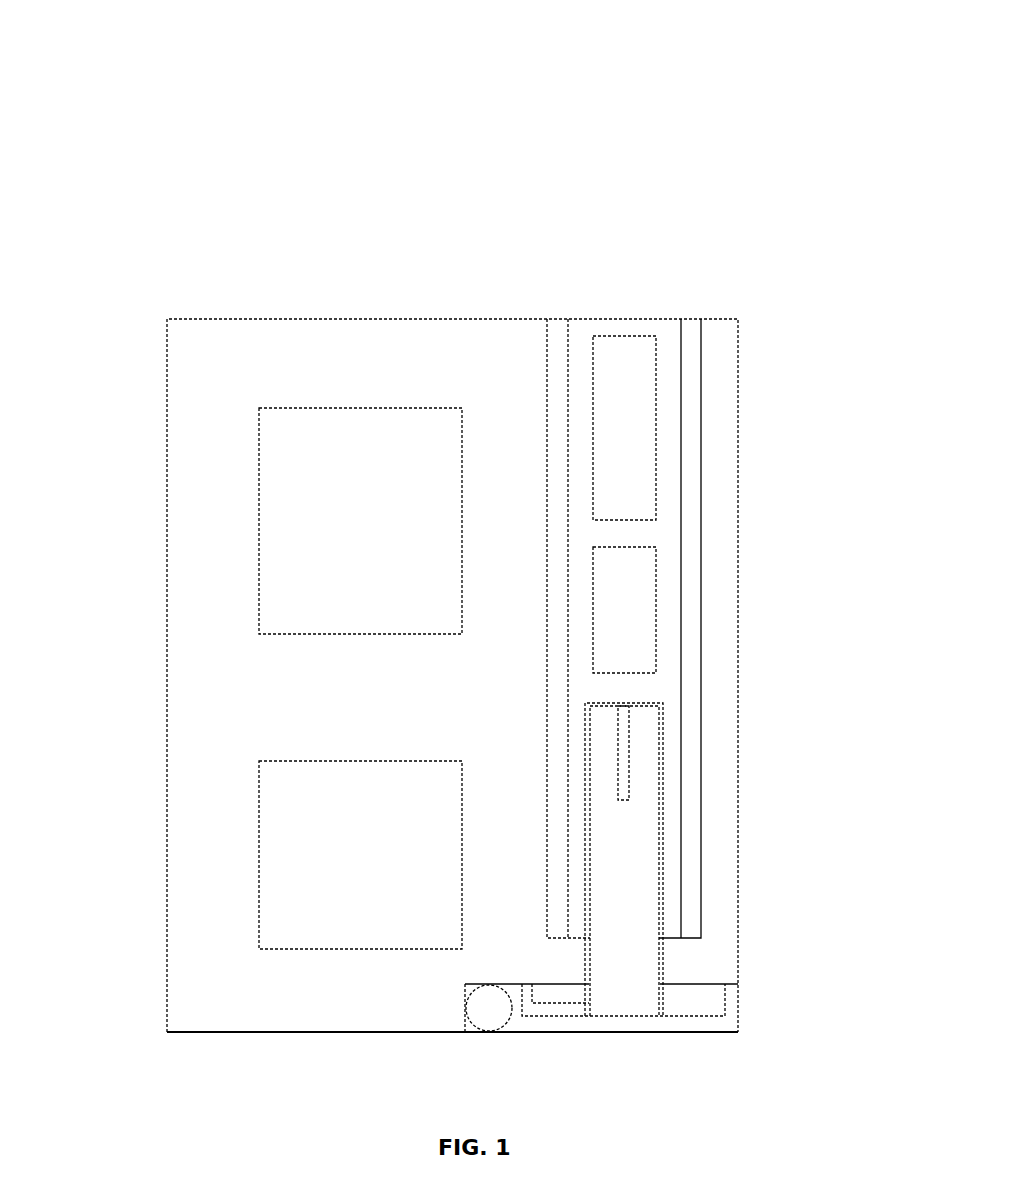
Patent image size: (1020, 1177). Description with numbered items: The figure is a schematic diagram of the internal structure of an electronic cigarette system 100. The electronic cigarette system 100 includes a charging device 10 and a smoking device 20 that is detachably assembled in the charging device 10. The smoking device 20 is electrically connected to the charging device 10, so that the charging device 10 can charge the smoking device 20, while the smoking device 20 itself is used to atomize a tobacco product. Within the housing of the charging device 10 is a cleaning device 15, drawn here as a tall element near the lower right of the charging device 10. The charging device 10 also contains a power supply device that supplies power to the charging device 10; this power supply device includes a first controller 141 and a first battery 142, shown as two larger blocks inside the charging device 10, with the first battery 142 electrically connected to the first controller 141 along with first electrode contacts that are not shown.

The electronic cigarette system 100 is at (456, 186).
The charging device 10 is at (762, 792).
The smoking device 20 is at (712, 586).
The cleaning device 15 is at (628, 976).
The first controller 141 is at (288, 905).
The first battery 142 is at (296, 571).